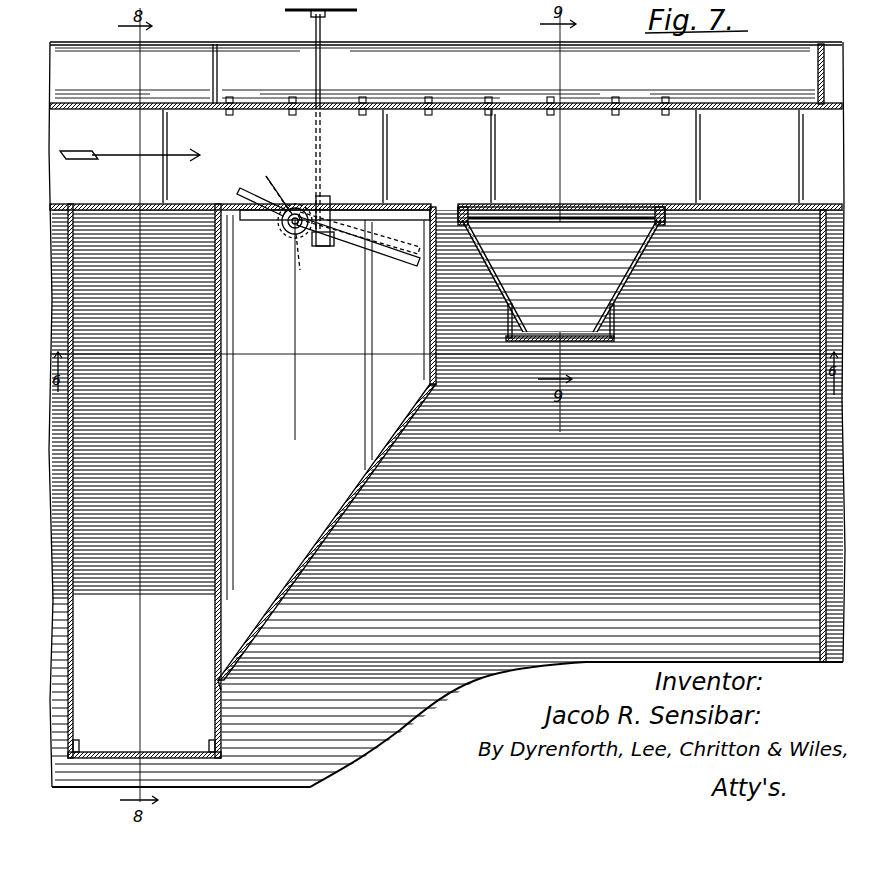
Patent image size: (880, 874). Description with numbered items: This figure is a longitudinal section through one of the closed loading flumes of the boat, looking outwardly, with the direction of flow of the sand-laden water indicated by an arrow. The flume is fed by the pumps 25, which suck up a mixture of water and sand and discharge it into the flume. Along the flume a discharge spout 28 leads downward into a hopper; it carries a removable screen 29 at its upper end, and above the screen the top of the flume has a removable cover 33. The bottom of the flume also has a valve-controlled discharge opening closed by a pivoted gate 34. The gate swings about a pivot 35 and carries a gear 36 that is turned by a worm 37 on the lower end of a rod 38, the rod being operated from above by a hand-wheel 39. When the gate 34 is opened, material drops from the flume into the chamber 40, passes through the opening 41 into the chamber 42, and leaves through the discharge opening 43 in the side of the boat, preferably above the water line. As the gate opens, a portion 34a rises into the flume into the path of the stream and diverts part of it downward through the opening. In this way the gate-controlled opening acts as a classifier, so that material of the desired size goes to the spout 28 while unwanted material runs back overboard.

The pump 25 is at (768, 170).
The discharge spout 28 is at (628, 278).
The removable screen 29 is at (596, 208).
The removable cover 33 is at (594, 101).
The pivoted gate 34 is at (392, 230).
The portion of the gate 34a is at (258, 190).
The pivot 35 is at (290, 226).
The gear 36 is at (309, 265).
The worm 37 is at (328, 200).
The rod 38 is at (322, 79).
The hand-wheel 39 is at (288, 12).
The chamber 40 is at (318, 404).
The opening 41 is at (218, 446).
The chamber 42 is at (182, 482).
The discharge opening 43 is at (150, 650).